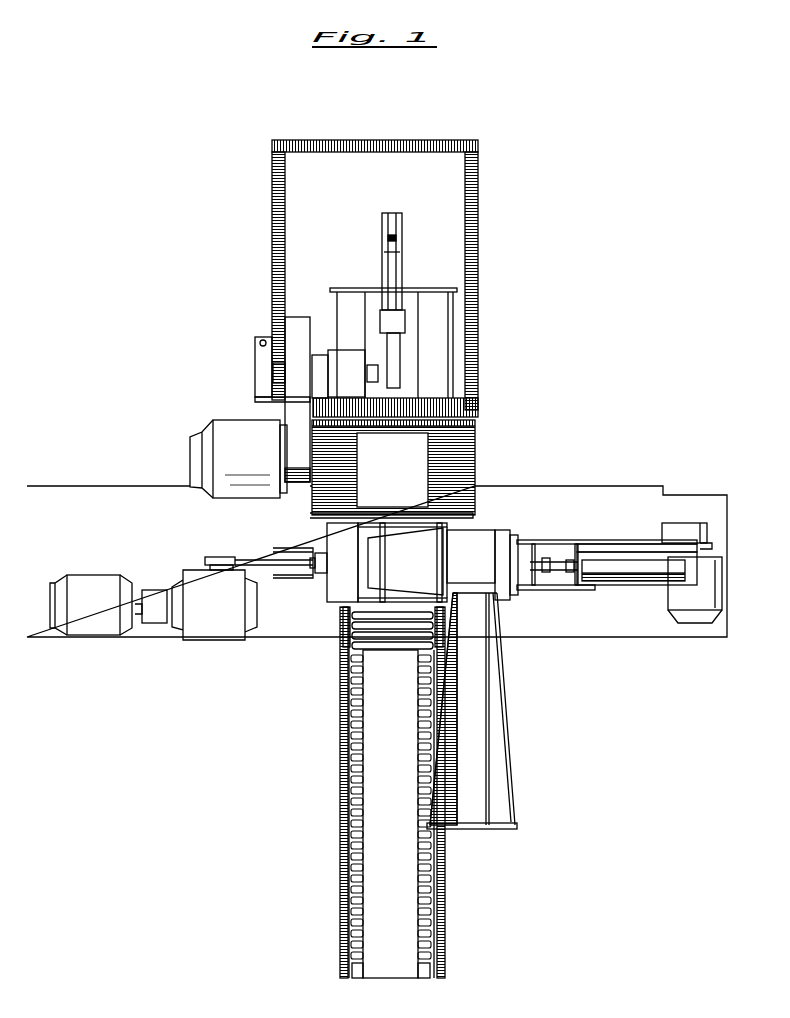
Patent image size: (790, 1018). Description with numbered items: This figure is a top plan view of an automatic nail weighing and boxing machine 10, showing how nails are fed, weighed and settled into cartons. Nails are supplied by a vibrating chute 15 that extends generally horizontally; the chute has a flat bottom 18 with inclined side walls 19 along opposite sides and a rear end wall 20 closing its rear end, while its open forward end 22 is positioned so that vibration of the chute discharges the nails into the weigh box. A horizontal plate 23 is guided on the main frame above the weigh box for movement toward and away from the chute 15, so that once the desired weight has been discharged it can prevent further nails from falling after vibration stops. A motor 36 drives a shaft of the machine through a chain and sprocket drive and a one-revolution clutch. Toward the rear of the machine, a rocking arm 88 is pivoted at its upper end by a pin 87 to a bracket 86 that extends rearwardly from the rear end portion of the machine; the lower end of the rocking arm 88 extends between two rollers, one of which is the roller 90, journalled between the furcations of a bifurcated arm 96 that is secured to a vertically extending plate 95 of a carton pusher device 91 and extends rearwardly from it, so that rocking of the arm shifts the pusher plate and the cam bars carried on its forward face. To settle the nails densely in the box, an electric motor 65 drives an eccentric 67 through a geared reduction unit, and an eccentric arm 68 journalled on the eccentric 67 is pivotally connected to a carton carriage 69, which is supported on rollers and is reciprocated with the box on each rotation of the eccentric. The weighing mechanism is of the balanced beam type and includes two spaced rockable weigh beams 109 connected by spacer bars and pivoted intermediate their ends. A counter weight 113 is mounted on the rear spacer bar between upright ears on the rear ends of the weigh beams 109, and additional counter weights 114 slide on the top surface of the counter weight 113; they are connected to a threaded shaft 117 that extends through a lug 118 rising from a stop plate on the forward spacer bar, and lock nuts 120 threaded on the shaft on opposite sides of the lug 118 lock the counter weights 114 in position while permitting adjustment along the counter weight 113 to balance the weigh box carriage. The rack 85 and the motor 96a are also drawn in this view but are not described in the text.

The automatic nail weighing and boxing machine 10 is at (478, 467).
The vibrating chute 15 is at (511, 738).
The flat bottom 18 is at (481, 707).
The inclined side walls 19 is at (503, 802).
The rear end wall 20 is at (482, 830).
The open forward end 22 is at (477, 597).
The horizontal plate 23 is at (487, 550).
The motor 36 is at (699, 607).
The electric motor 65 is at (97, 611).
The eccentric 67 is at (223, 557).
The eccentric arm 68 is at (253, 559).
The carton carriage 69 is at (322, 589).
The rack 85 is at (394, 879).
The bracket 86 is at (400, 373).
The pin 87 is at (403, 312).
The rocking arm 88 is at (388, 251).
The roller 90 is at (391, 216).
The carton pusher device 91 is at (439, 286).
The vertically extending plate 95 is at (346, 288).
The bifurcated arm 96 is at (382, 218).
The motor 96a is at (252, 456).
The weigh beams 109 is at (565, 541).
The counter weight 113 is at (625, 554).
The counter weights 114 is at (637, 568).
The threaded shaft 117 is at (565, 571).
The lug 118 is at (528, 588).
The lock nuts 120 is at (549, 557).